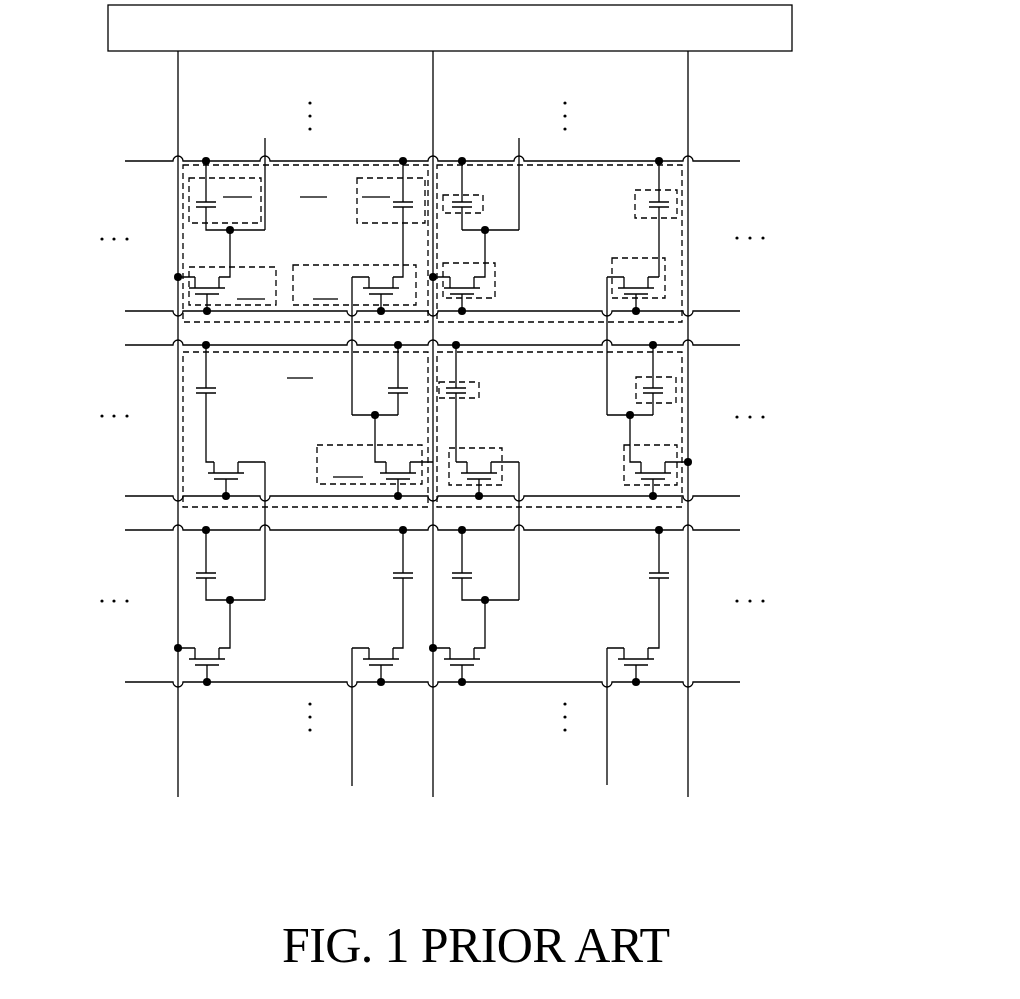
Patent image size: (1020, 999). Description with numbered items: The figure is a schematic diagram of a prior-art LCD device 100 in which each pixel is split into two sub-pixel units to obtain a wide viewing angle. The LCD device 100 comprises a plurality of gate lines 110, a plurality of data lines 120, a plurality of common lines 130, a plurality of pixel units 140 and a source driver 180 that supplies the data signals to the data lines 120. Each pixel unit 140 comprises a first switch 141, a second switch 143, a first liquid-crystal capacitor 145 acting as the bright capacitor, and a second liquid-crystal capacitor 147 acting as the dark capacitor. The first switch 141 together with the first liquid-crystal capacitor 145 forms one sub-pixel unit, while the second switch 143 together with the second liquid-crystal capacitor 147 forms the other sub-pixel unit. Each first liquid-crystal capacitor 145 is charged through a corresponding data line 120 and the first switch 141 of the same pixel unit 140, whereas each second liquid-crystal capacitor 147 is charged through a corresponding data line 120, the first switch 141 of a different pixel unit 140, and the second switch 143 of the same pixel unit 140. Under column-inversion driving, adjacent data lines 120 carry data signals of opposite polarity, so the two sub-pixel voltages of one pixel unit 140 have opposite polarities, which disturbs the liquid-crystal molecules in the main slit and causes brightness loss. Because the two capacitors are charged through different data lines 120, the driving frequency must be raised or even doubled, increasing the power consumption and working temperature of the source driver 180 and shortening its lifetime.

The LCD device 100 is at (834, 112).
The gate line 110 is at (713, 310).
The data line 120 is at (178, 733).
The common line 130 is at (723, 162).
The pixel unit 140 is at (183, 200).
The first switch 141 is at (497, 283).
The second switch 143 is at (613, 262).
The first liquid-crystal capacitor 145 is at (500, 192).
The second liquid-crystal capacitor 147 is at (680, 193).
The source driver 180 is at (108, 31).